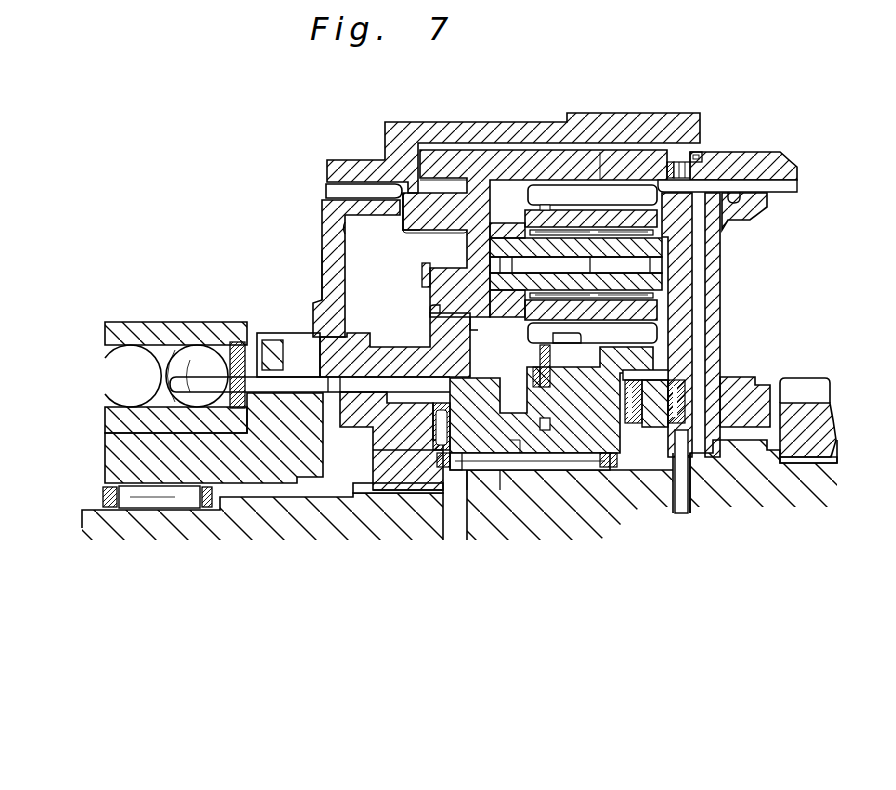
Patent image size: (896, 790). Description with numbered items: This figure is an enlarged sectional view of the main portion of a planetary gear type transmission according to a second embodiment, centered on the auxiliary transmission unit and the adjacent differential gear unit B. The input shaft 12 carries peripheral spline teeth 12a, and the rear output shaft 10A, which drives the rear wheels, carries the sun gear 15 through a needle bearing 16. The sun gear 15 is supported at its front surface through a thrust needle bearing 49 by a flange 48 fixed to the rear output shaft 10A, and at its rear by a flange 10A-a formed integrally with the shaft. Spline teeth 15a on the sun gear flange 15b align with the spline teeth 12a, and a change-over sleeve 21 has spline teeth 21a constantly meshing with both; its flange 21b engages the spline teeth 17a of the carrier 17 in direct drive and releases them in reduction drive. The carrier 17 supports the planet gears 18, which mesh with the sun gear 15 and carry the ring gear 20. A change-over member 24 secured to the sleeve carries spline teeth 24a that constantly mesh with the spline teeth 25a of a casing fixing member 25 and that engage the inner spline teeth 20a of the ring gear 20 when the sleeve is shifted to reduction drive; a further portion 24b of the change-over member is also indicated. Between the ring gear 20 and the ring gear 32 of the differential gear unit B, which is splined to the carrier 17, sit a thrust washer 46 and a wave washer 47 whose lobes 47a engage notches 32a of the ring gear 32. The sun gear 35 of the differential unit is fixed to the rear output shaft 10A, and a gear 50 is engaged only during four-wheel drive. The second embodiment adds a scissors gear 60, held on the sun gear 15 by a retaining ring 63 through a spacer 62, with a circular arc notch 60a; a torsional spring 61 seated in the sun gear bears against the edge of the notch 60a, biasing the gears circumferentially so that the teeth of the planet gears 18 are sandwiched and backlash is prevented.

The casing fixing member 25 is at (387, 133).
The spline teeth of change-over member 24a is at (324, 190).
The change-over member 24 is at (330, 207).
The spline teeth of casing fixing member 25a is at (343, 230).
The wall lower portion 24b is at (330, 265).
The spline teeth of input shaft 12a is at (298, 345).
The input shaft 12 is at (103, 455).
The rear output shaft 10A is at (83, 526).
The flange of rear output shaft 10A-a is at (683, 430).
The flange 48 is at (387, 493).
The change-over sleeve 21 is at (378, 350).
The spline teeth of change-over sleeve 21a is at (380, 402).
The spline teeth of carrier 17a is at (430, 312).
The flange of change-over sleeve 21b is at (473, 327).
The ring gear 20 is at (518, 158).
The spline teeth of ring gear 20a is at (568, 183).
The thrust washer 46 is at (630, 170).
The lobes of wave washer 47a is at (671, 160).
The wave washer 47 is at (723, 157).
The notches of ring gear 32a is at (702, 157).
The ring gear of differential gear unit 32 is at (793, 160).
The planet gears 18 is at (708, 306).
The differential gear unit B is at (762, 334).
The carrier 17 is at (733, 408).
The sun gear of differential gear unit 35 is at (831, 428).
The sun gear 15 is at (645, 358).
The flange of sun gear 15b is at (636, 445).
The spline teeth of sun gear 15a is at (495, 470).
The scissors gear 60 is at (567, 470).
The circular arc notch 60a is at (500, 470).
The spacer 62 is at (525, 462).
The retaining ring 63 is at (515, 445).
The needle bearing 16 is at (545, 425).
The torsional spring 61 is at (550, 342).
The thrust needle bearing 49 is at (448, 432).
The gear 50 is at (665, 447).